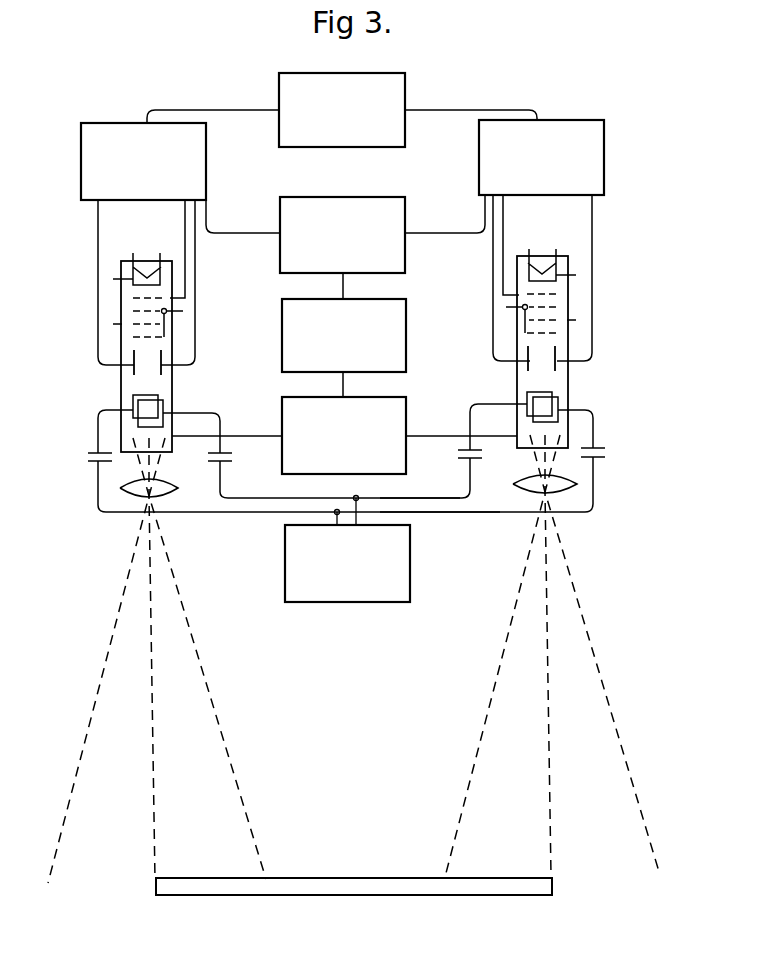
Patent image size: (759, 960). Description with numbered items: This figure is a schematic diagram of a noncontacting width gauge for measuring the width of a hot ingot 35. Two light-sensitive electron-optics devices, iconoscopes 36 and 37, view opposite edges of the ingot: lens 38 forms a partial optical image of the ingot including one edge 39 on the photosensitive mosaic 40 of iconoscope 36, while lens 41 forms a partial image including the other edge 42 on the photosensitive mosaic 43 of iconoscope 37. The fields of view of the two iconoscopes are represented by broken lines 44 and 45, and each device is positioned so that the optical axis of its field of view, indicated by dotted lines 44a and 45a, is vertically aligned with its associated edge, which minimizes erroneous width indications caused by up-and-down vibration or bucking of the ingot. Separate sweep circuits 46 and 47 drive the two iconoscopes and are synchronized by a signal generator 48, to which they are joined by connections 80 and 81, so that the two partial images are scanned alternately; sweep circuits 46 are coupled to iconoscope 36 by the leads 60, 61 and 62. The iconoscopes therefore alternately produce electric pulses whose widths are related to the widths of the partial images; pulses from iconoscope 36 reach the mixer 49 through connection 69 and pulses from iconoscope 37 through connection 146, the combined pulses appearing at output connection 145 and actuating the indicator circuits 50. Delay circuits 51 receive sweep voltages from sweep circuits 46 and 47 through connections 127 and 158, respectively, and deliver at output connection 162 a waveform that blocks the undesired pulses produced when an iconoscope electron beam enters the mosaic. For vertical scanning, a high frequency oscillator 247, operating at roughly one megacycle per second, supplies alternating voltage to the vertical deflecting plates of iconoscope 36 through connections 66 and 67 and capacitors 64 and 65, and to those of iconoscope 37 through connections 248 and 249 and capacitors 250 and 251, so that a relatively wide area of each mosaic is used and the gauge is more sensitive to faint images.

The signal generator 48 is at (405, 82).
The sweep circuits 46 is at (206, 158).
The sweep circuits 47 is at (604, 147).
The connection line 80 is at (265, 102).
The connection line 81 is at (510, 110).
The delay circuits 51 is at (405, 204).
The connection 127 is at (234, 233).
The connection 158 is at (460, 233).
The output connection 162 is at (343, 284).
The indicator circuits 50 is at (406, 328).
The output connection 145 is at (343, 385).
The mixer 49 is at (406, 458).
The connection 69 is at (265, 436).
The connection 146 is at (453, 436).
The deflection plate lead 60 is at (98, 218).
The deflection plate lead 61 is at (195, 240).
The grid lead 62 is at (185, 230).
The iconoscope 36 is at (121, 385).
The iconoscope 37 is at (568, 380).
The photosensitive mosaic 40 is at (163, 440).
The photosensitive mosaic 43 is at (552, 440).
The capacitor 64 is at (95, 458).
The capacitor 65 is at (232, 455).
The capacitor 251 is at (482, 453).
The capacitor 250 is at (605, 453).
The connection 66 is at (229, 505).
The connection 67 is at (250, 498).
The connection 248 is at (458, 512).
The connection 249 is at (468, 493).
The high frequency oscillator 247 is at (410, 564).
The lens 38 is at (178, 490).
The lens 41 is at (565, 492).
The broken lines 44 is at (212, 692).
The dotted line 44a is at (152, 770).
The broken lines 45 is at (608, 668).
The dotted line 45a is at (551, 755).
The hot ingot 35 is at (346, 872).
The edge 39 is at (156, 890).
The edge 42 is at (552, 886).